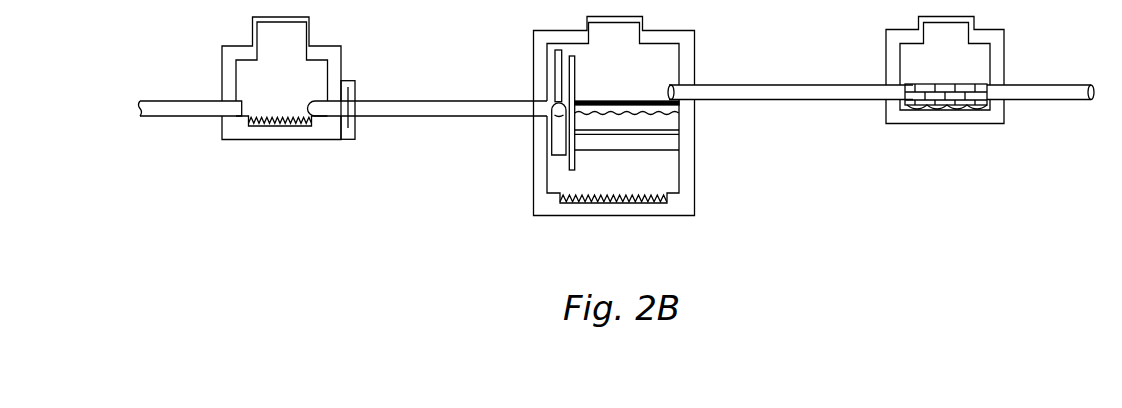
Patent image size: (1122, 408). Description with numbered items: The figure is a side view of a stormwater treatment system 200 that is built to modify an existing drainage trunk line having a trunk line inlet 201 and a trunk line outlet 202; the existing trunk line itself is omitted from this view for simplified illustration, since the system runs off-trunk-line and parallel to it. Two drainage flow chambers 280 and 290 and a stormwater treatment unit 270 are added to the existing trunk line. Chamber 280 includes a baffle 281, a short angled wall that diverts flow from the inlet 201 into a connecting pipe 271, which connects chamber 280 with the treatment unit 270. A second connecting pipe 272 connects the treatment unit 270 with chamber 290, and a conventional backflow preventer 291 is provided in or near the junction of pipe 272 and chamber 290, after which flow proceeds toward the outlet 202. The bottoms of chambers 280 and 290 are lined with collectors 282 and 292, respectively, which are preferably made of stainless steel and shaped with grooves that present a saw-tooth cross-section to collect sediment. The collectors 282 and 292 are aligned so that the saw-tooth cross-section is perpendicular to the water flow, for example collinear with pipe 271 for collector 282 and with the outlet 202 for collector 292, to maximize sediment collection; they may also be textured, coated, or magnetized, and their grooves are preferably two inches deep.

The stormwater treatment system 200 is at (633, 258).
The trunk line inlet 201 is at (1033, 85).
The trunk line outlet 202 is at (188, 100).
The stormwater treatment unit 270 is at (658, 216).
The connecting pipe 271 is at (768, 102).
The connecting pipe 272 is at (407, 117).
The drainage flow chamber 280 is at (938, 125).
The baffle 281 is at (933, 84).
The collector 282 is at (978, 107).
The drainage flow chamber 290 is at (272, 141).
The backflow preventer 291 is at (355, 87).
The collector 292 is at (284, 117).